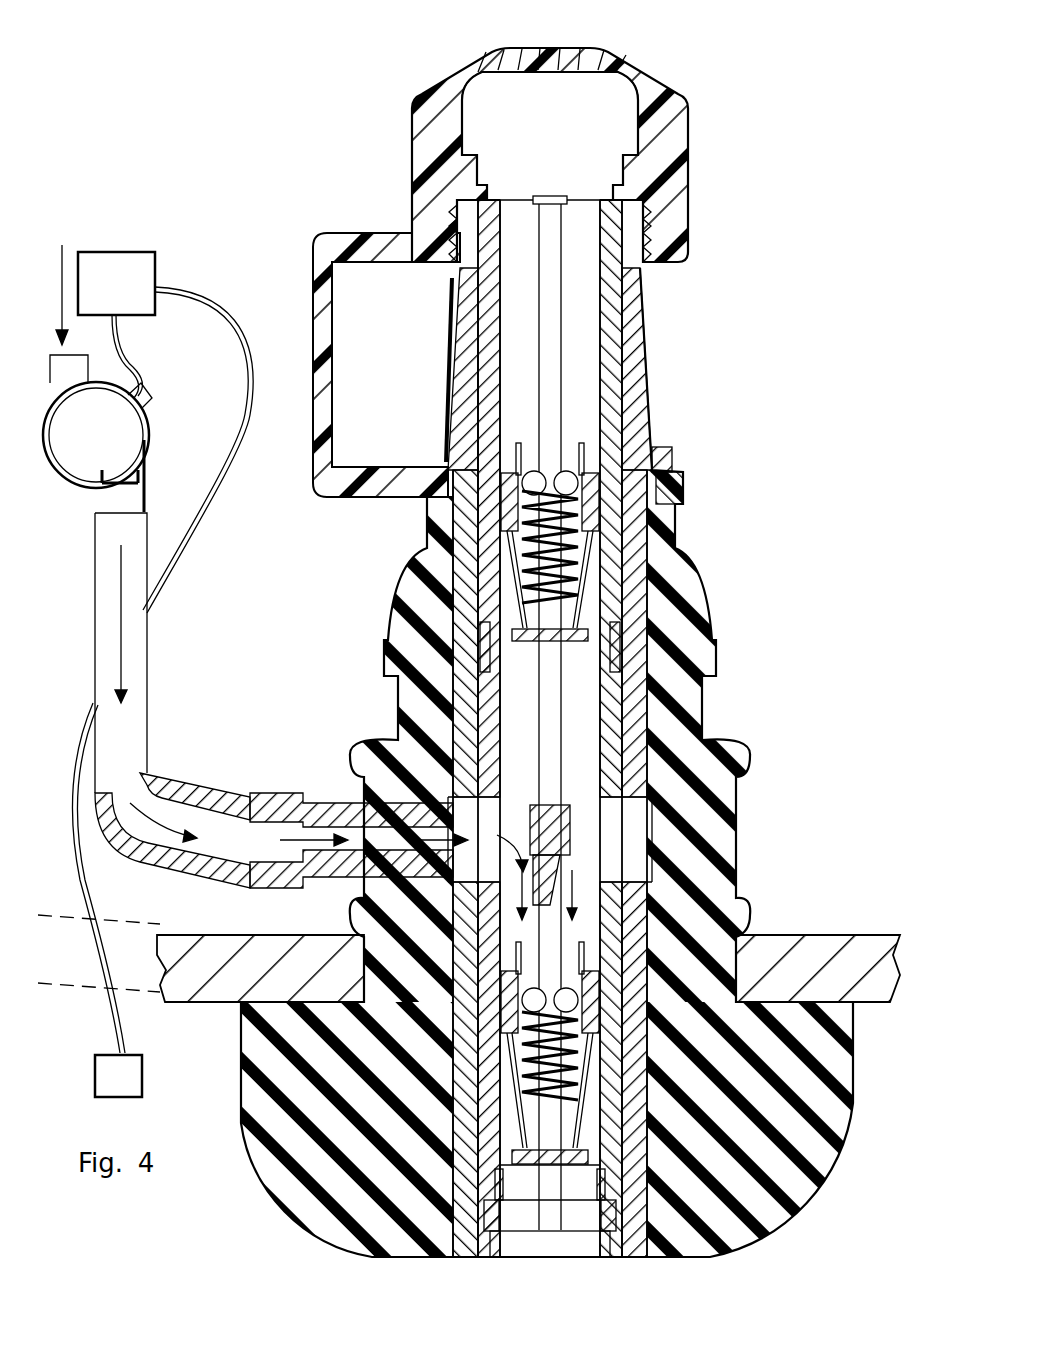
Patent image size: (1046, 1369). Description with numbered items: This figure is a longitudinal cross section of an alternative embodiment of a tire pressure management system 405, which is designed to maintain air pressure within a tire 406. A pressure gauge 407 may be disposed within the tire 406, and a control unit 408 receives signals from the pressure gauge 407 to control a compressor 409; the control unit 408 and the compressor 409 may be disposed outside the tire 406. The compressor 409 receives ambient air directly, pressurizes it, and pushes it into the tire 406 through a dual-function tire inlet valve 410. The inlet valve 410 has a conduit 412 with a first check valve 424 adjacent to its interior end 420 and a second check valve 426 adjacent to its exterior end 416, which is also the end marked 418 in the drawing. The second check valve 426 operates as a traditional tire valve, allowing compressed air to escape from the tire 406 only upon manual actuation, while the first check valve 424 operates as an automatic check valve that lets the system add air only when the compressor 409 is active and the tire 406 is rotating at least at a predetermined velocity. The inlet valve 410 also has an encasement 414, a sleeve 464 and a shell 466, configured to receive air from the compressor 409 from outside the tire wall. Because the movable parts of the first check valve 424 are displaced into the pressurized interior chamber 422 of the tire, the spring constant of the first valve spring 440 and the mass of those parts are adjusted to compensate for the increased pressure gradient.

The tire pressure management system 405 is at (840, 140).
The tire 406 is at (198, 940).
The pressure gauge 407 is at (105, 1086).
The control unit 408 is at (100, 296).
The compressor 409 is at (79, 445).
The dual-function tire inlet valve 410 is at (712, 328).
The conduit 412 is at (618, 235).
The encasement 414 is at (684, 500).
The exterior end 416 is at (596, 112).
The top end 418 is at (532, 28).
The interior end 420 is at (584, 1266).
The interior chamber 422 is at (533, 1300).
The first check valve 424 is at (596, 1060).
The second check valve 426 is at (490, 553).
The first valve spring 440 is at (515, 1052).
The sleeve 464 is at (618, 440).
The shell 466 is at (664, 470).